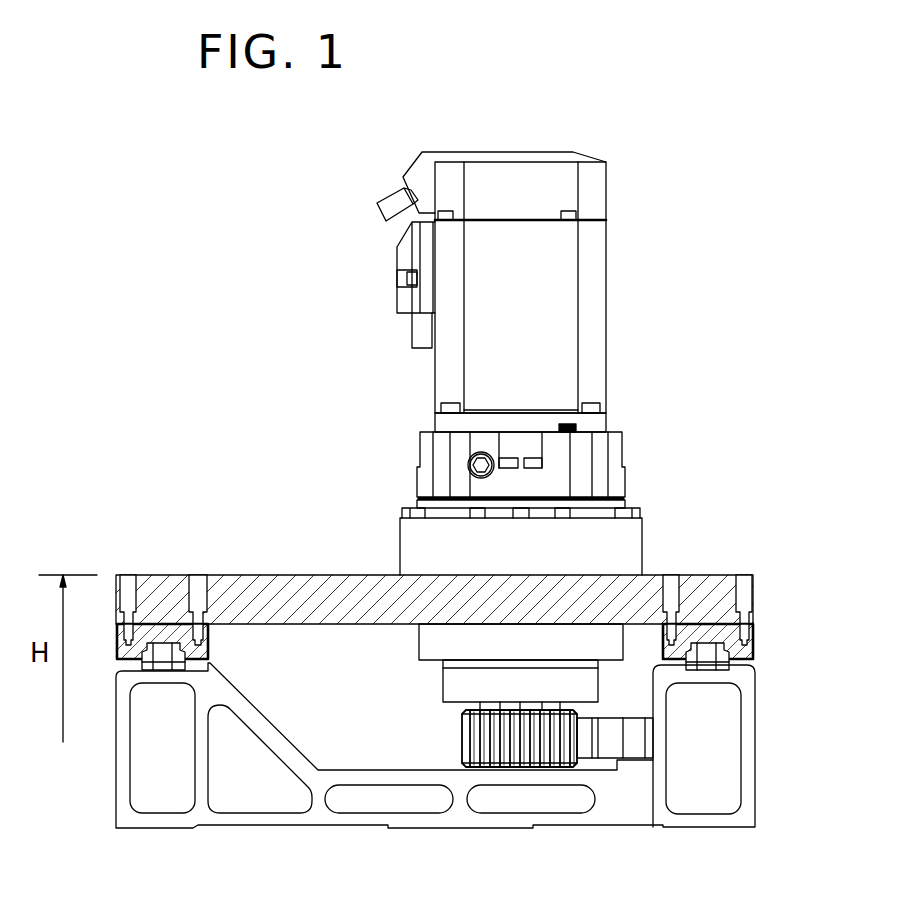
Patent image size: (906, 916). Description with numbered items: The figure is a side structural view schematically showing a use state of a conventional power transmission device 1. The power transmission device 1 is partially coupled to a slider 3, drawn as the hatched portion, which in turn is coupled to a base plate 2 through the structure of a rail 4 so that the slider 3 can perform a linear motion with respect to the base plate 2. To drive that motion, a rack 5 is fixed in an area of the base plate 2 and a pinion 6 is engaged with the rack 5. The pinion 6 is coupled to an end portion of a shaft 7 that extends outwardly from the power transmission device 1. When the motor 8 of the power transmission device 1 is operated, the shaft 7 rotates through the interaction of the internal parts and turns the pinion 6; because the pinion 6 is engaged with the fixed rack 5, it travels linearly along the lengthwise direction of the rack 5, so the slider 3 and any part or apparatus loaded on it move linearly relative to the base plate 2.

The power transmission device 1 is at (672, 433).
The base plate 2 is at (747, 810).
The slider 3 is at (720, 593).
The rail 4 is at (727, 650).
The rack 5 is at (633, 748).
The pinion 6 is at (556, 753).
The shaft 7 is at (518, 767).
The motor 8 is at (593, 198).